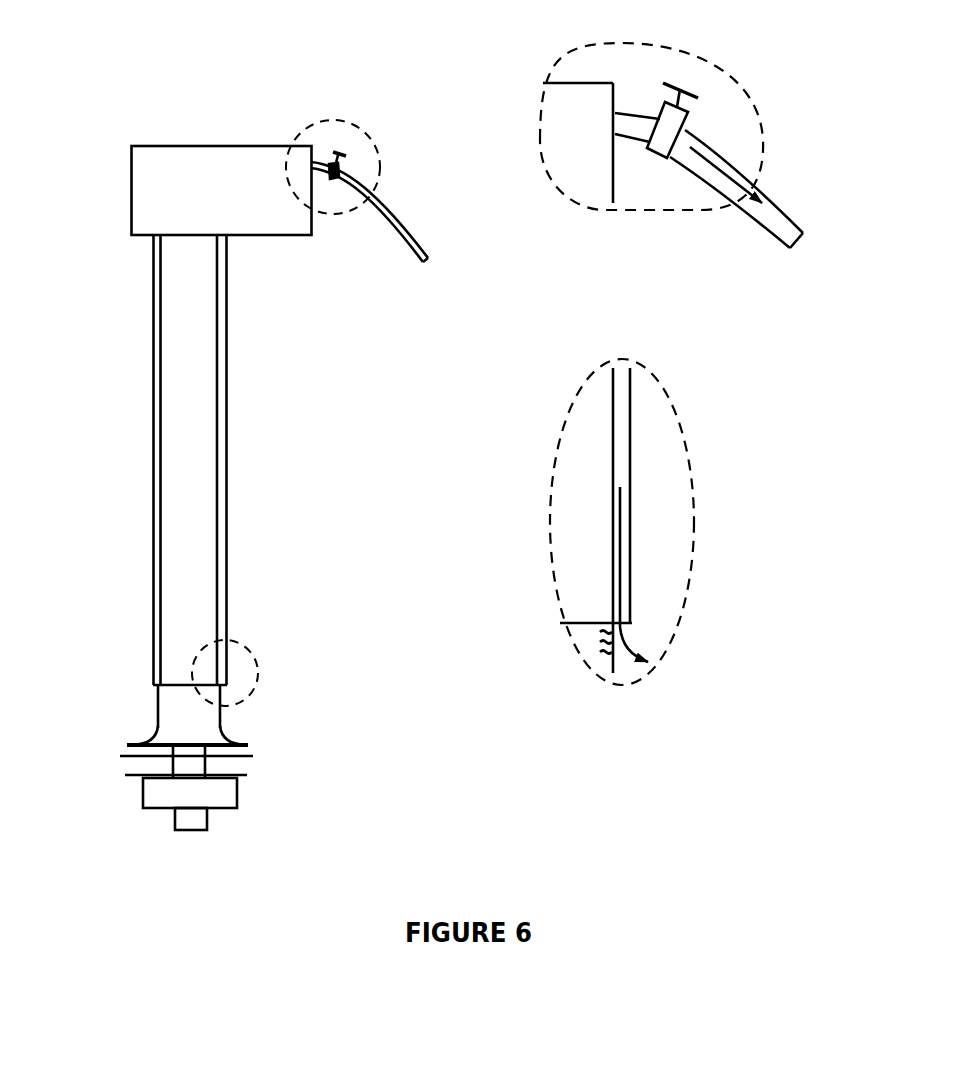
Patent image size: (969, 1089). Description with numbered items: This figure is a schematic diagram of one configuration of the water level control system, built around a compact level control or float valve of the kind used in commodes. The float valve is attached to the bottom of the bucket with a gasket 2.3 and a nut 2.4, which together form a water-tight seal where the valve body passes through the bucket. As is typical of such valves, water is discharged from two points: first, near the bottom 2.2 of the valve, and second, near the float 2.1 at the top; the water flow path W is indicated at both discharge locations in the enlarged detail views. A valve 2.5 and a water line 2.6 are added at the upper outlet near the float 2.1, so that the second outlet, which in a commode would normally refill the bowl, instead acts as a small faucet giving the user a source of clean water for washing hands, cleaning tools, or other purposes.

The float 2.1 is at (190, 141).
The bottom 2.2 is at (152, 677).
The gasket 2.3 is at (255, 759).
The nut 2.4 is at (235, 808).
The valve 2.5 is at (346, 170).
The water line 2.6 is at (432, 246).
The water flow path W is at (714, 155).